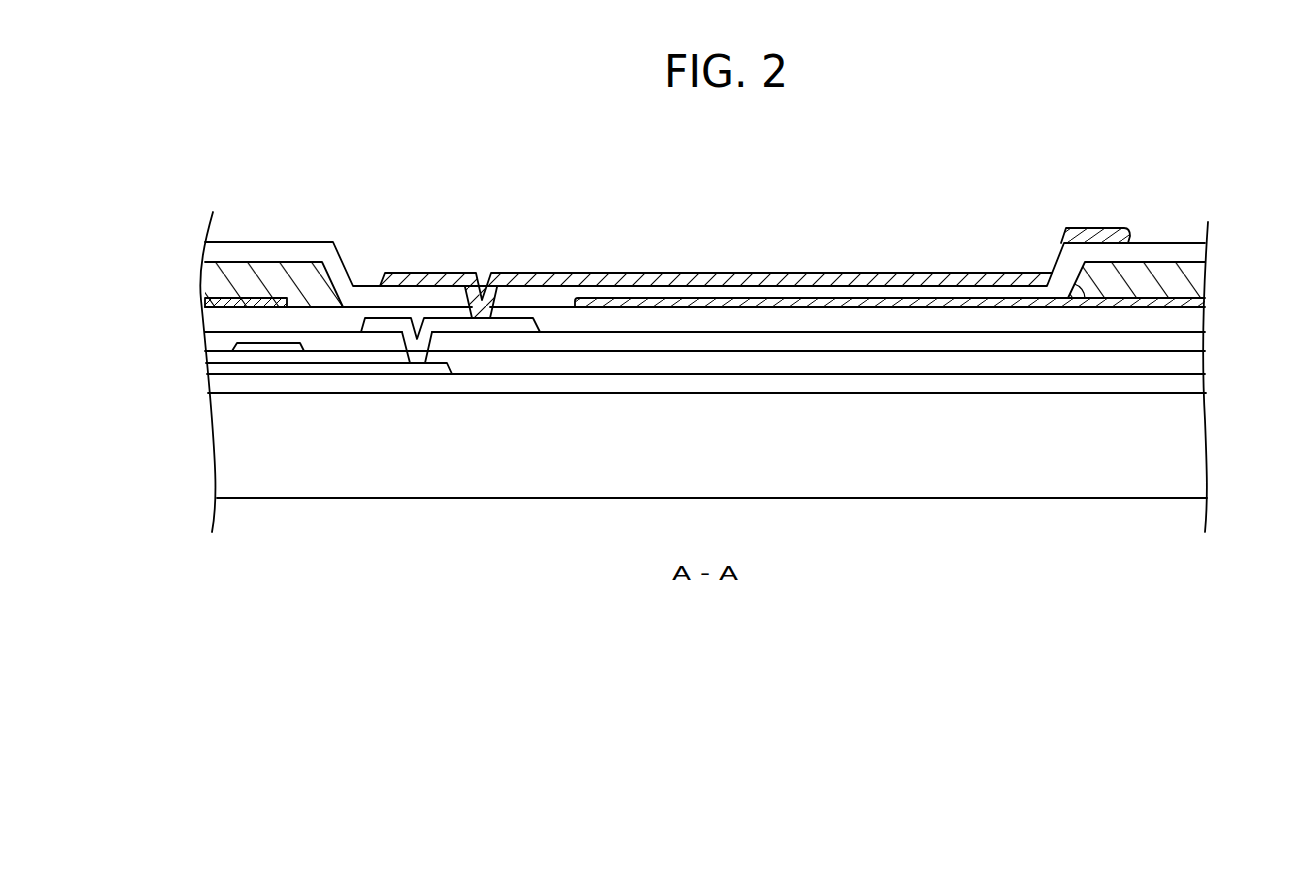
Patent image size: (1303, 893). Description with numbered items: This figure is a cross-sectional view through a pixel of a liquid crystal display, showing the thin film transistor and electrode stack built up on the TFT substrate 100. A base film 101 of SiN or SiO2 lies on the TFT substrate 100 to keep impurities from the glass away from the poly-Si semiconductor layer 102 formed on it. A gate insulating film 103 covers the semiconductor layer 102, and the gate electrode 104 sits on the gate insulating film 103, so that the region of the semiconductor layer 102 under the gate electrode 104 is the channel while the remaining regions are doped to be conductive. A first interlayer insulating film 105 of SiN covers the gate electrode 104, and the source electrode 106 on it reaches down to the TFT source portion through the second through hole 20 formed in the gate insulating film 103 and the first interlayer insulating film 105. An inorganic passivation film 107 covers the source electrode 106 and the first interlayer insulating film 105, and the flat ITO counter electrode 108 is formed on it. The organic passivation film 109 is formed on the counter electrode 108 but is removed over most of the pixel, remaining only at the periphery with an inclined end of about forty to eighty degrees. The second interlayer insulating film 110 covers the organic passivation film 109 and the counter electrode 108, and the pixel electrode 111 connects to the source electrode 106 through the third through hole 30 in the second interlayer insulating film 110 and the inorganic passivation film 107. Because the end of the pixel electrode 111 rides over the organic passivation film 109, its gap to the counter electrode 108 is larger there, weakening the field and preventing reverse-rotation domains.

The TFT substrate 100 is at (1190, 448).
The base film 101 is at (1190, 393).
The semiconductor layer 102 is at (338, 375).
The gate insulating film 103 is at (1190, 368).
The gate electrode 104 is at (262, 352).
The first interlayer insulating film 105 is at (1190, 343).
The source electrode 106 is at (477, 327).
The inorganic passivation film 107 is at (1190, 318).
The counter electrode 108 is at (205, 303).
The organic passivation film 109 is at (205, 283).
The second interlayer insulating film 110 is at (842, 283).
The pixel electrode 111 is at (1092, 232).
The second through hole 20 is at (420, 321).
The third through hole 30 is at (480, 285).